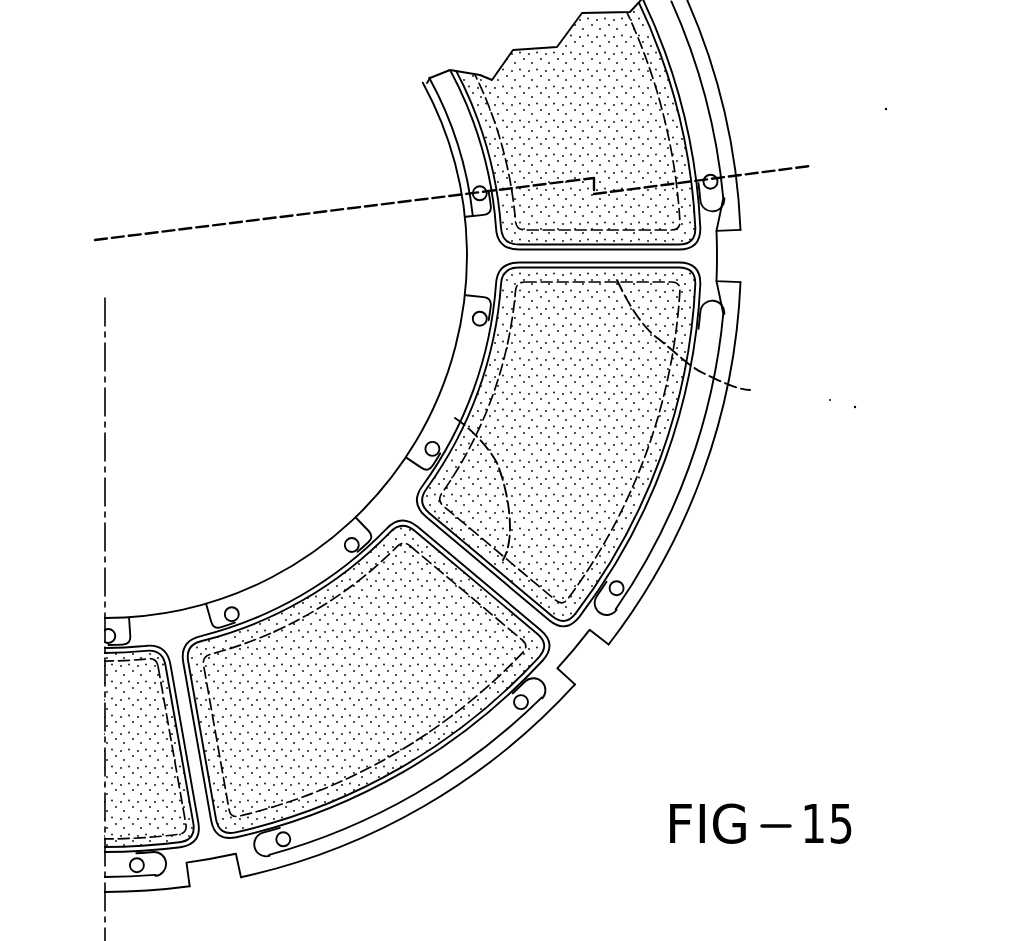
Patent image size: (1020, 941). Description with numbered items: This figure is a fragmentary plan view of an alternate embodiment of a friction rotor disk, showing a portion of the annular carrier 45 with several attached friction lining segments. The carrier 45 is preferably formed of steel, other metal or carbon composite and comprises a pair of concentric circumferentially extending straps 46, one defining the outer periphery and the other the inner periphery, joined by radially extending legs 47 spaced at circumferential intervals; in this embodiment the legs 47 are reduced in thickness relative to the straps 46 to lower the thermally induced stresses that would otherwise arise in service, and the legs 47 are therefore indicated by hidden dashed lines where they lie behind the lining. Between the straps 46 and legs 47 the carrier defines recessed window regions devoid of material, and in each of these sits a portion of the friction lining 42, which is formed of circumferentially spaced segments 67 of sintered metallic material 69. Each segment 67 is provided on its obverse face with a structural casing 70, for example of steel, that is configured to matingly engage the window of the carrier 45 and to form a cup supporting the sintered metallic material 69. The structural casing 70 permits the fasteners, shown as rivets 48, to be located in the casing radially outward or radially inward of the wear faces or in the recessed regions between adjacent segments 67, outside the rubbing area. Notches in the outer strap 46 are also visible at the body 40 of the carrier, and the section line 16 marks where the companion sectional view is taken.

The section line 16- 16 is at (95, 240).
The annular ring body 40 is at (467, 446).
The friction lining 42 is at (581, 445).
The carrier 45 is at (698, 256).
The circumferentially extending strap 46 is at (176, 606).
The radially extending leg 47 is at (750, 390).
The rivet 48 is at (472, 316).
The segment 67 is at (637, 530).
The sintered metallic material 69 is at (366, 719).
The structural casing 70 is at (320, 807).